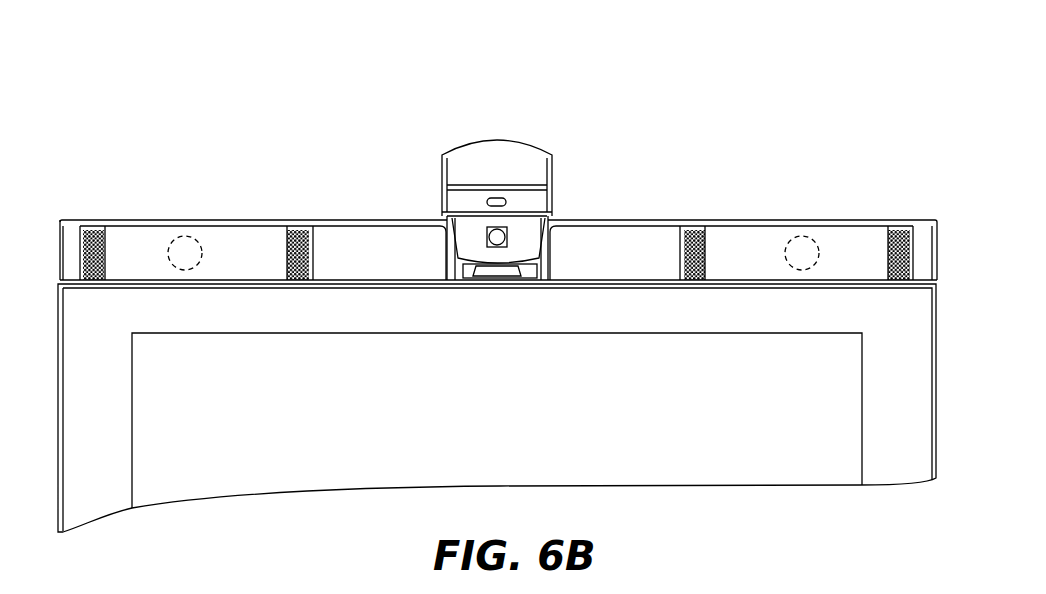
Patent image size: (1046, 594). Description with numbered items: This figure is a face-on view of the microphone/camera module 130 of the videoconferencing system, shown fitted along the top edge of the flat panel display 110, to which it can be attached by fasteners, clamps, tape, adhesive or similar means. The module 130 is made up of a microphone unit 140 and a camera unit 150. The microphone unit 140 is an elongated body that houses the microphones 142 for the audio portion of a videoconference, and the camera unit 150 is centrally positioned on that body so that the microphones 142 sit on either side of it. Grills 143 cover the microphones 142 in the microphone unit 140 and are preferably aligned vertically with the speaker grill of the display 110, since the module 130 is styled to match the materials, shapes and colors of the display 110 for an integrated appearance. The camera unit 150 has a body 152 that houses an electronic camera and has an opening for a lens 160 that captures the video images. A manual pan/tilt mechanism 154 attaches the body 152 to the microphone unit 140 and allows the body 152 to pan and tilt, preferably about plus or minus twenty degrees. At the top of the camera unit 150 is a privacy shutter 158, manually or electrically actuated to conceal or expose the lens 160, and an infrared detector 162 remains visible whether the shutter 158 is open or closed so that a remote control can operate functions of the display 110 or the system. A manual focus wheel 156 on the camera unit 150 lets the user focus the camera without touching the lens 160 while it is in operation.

The flat panel display 110 is at (259, 438).
The microphone/camera module 130 is at (128, 146).
The microphone unit 140 is at (122, 220).
The microphones 142 is at (187, 236).
The grills 143 is at (893, 228).
The camera unit 150 is at (448, 96).
The body 152 is at (447, 222).
The manual pan/tilt mechanism 154 is at (461, 277).
The manual focus wheel 156 is at (497, 264).
The privacy shutter 158 is at (533, 147).
The lens 160 is at (505, 242).
The infrared detector 162 is at (506, 202).